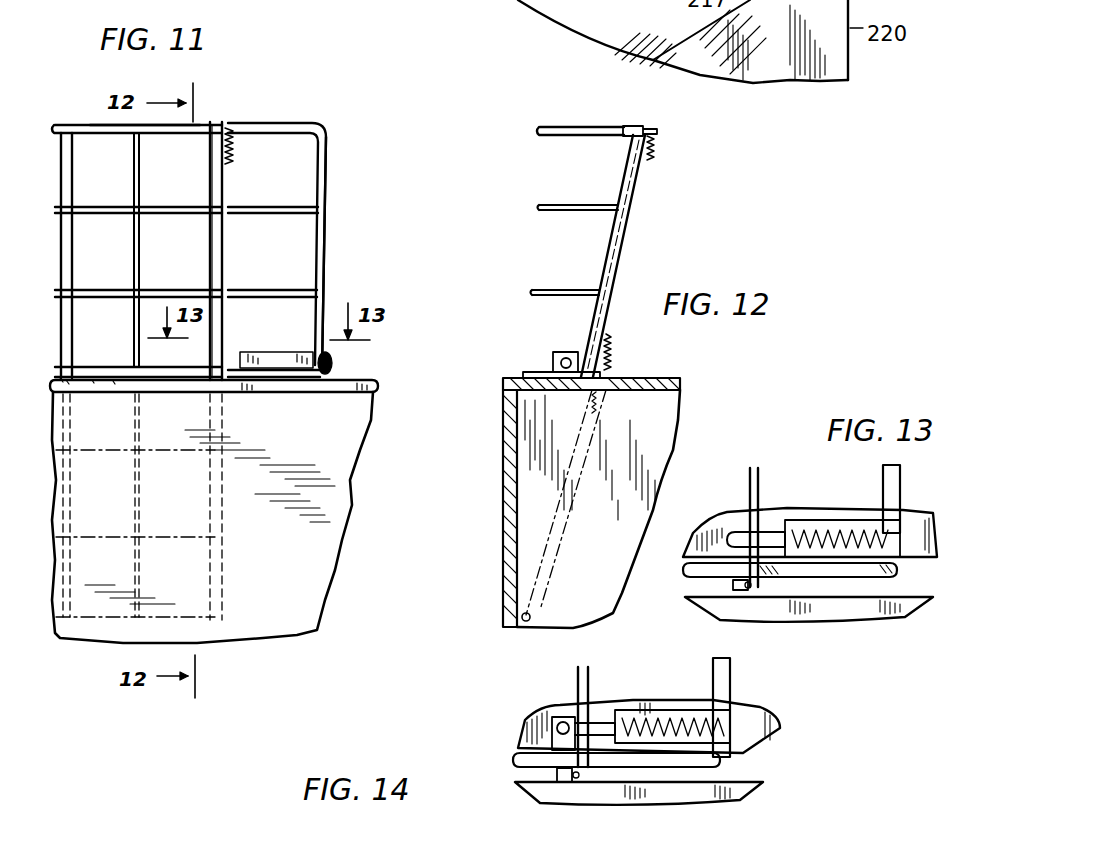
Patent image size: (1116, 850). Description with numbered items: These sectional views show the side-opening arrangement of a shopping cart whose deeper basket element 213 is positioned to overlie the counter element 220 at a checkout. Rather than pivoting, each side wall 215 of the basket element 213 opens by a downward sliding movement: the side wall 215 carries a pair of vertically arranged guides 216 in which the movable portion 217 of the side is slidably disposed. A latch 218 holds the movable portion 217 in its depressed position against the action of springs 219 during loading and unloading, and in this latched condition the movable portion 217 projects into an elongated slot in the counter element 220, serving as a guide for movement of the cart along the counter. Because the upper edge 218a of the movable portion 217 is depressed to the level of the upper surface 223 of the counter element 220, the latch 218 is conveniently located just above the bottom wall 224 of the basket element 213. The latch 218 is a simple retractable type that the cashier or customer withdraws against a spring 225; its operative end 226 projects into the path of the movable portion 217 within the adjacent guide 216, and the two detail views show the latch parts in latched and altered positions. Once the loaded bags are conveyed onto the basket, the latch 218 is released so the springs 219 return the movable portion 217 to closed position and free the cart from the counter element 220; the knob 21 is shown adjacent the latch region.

In FIG. 11, the locking knob 21 is at (333, 362).
In FIG. 11, the basket element 213 is at (330, 128).
In FIG. 11, the side wall 215 is at (270, 122).
In FIG. 11, the guide 216 is at (217, 122).
In FIG. 12, the guide 216 is at (564, 505).
In FIG. 13, the guide 216 is at (768, 573).
In FIG. 14, the guide 216 is at (588, 720).
In FIG. 11, the movable portion 217 is at (75, 131).
In FIG. 12, the movable portion 217 is at (632, 208).
In FIG. 12, the latch 218 is at (573, 352).
In FIG. 13, the latch 218 is at (917, 533).
In FIG. 14, the latch 218 is at (743, 733).
In FIG. 11, the upper edge 218a is at (97, 122).
In FIG. 12, the upper edge 218a is at (647, 122).
In FIG. 11, the spring 219 is at (233, 153).
In FIG. 12, the spring 219 is at (652, 152).
In FIG. 13, the spring 219 is at (750, 587).
In FIG. 14, the spring 219 is at (570, 780).
In FIG. 11, the counter element 220 is at (284, 623).
In FIG. 12, the counter element 220 is at (505, 570).
In FIG. 13, the counter element 220 is at (905, 617).
In FIG. 14, the counter element 220 is at (760, 793).
In FIG. 11, the upper surface 223 is at (373, 378).
In FIG. 12, the upper surface 223 is at (653, 378).
In FIG. 12, the bottom wall 224 is at (541, 373).
In FIG. 13, the spring 225 is at (858, 527).
In FIG. 14, the spring 225 is at (677, 718).
In FIG. 12, the operative end 226 is at (560, 358).
In FIG. 13, the operative end 226 is at (750, 530).
In FIG. 14, the operative end 226 is at (560, 717).